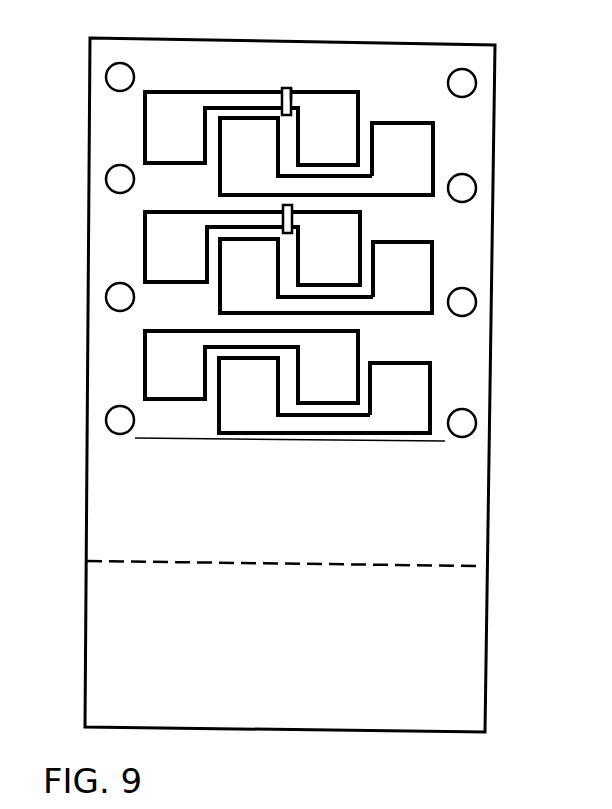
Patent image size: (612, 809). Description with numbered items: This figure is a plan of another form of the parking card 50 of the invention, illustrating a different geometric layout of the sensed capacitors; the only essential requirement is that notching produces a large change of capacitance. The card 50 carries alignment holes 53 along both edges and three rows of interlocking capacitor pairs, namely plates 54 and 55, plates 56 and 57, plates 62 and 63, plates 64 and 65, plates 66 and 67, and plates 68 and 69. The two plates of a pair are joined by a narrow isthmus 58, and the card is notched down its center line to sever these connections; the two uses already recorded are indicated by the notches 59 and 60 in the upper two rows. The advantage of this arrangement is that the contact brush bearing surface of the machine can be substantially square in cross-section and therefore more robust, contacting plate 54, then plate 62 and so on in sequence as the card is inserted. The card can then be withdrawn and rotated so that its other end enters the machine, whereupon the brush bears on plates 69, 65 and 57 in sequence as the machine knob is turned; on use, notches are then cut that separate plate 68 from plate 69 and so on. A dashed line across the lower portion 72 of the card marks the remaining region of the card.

The card 50 is at (162, 55).
The alignment holes 53 is at (117, 77).
The capacitor plate 54 is at (177, 117).
The capacitor plate 55 is at (335, 115).
The capacitor plate 56 is at (245, 137).
The capacitor plate 57 is at (412, 137).
The isthmus 58 is at (270, 100).
The notch 59 is at (293, 88).
The notch 60 is at (282, 208).
The capacitor plate 62 is at (158, 243).
The capacitor plate 63 is at (352, 232).
The capacitor plate 64 is at (230, 288).
The capacitor plate 65 is at (418, 273).
The capacitor plate 66 is at (158, 360).
The capacitor plate 67 is at (345, 355).
The capacitor plate 68 is at (228, 405).
The capacitor plate 69 is at (418, 390).
The break-off line of board 72 is at (323, 713).